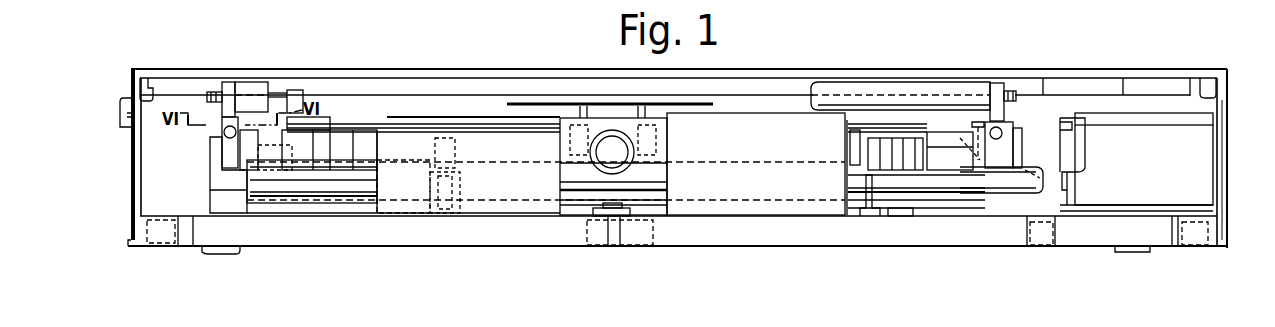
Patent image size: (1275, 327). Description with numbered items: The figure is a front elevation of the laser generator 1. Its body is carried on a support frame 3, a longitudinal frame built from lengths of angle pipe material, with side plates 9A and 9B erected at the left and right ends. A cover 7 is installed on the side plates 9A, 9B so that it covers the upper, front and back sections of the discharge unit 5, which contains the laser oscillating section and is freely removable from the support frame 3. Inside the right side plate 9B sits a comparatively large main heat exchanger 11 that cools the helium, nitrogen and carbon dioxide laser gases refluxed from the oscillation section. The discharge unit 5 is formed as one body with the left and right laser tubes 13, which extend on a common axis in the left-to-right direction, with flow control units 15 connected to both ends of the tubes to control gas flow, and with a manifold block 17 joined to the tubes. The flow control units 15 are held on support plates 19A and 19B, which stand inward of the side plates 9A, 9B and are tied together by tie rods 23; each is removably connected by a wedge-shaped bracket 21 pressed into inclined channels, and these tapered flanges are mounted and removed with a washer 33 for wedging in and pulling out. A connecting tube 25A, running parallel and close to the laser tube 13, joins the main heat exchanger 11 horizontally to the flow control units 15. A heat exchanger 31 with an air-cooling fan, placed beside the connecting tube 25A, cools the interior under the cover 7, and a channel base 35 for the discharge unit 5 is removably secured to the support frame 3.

The laser generator 1 is at (756, 68).
The support frame 3 is at (552, 238).
The discharge unit 5 is at (441, 95).
The cover 7 is at (482, 75).
The side plate 9A is at (128, 135).
The side plate 9B is at (1228, 152).
The main heat exchanger 11 is at (1145, 172).
The laser tube 13 is at (346, 133).
The flow control unit 15 is at (284, 100).
The manifold block 17 is at (637, 176).
The support plate 19A is at (228, 83).
The support plate 19B is at (998, 80).
The wedge-shaped bracket 21 is at (252, 132).
The tie rod 23 is at (248, 84).
The connecting tube 25A is at (1018, 193).
The heat exchanger 31 is at (503, 222).
The washer 33 is at (245, 166).
The channel base 35 is at (935, 218).